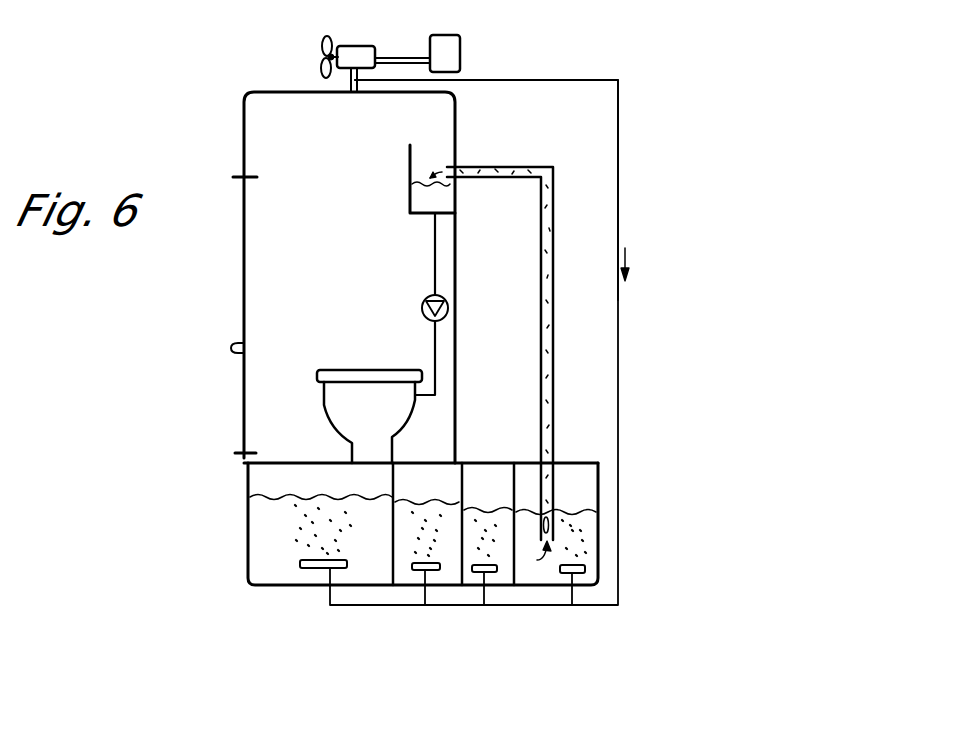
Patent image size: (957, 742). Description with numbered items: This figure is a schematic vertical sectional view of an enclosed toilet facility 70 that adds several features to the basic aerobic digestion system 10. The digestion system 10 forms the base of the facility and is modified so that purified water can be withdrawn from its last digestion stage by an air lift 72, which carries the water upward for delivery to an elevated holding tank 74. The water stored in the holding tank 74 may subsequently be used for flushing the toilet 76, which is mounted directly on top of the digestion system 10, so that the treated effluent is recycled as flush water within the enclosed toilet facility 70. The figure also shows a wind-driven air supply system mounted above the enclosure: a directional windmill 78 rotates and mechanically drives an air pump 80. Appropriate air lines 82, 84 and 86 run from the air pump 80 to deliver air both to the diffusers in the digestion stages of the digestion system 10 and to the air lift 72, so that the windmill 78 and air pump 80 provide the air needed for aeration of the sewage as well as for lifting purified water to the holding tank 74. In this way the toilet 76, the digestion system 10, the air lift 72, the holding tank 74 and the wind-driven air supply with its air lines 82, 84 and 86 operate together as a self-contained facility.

The digestion system 10 is at (243, 527).
The enclosed toilet facility 70 is at (232, 142).
The air lift 72 is at (554, 333).
The holding tank 74 is at (409, 172).
The toilet 76 is at (342, 416).
The directional windmill 78 is at (322, 52).
The air pump 80 is at (364, 52).
The air line 82 is at (583, 80).
The air line 84 is at (602, 607).
The air line 86 is at (527, 527).